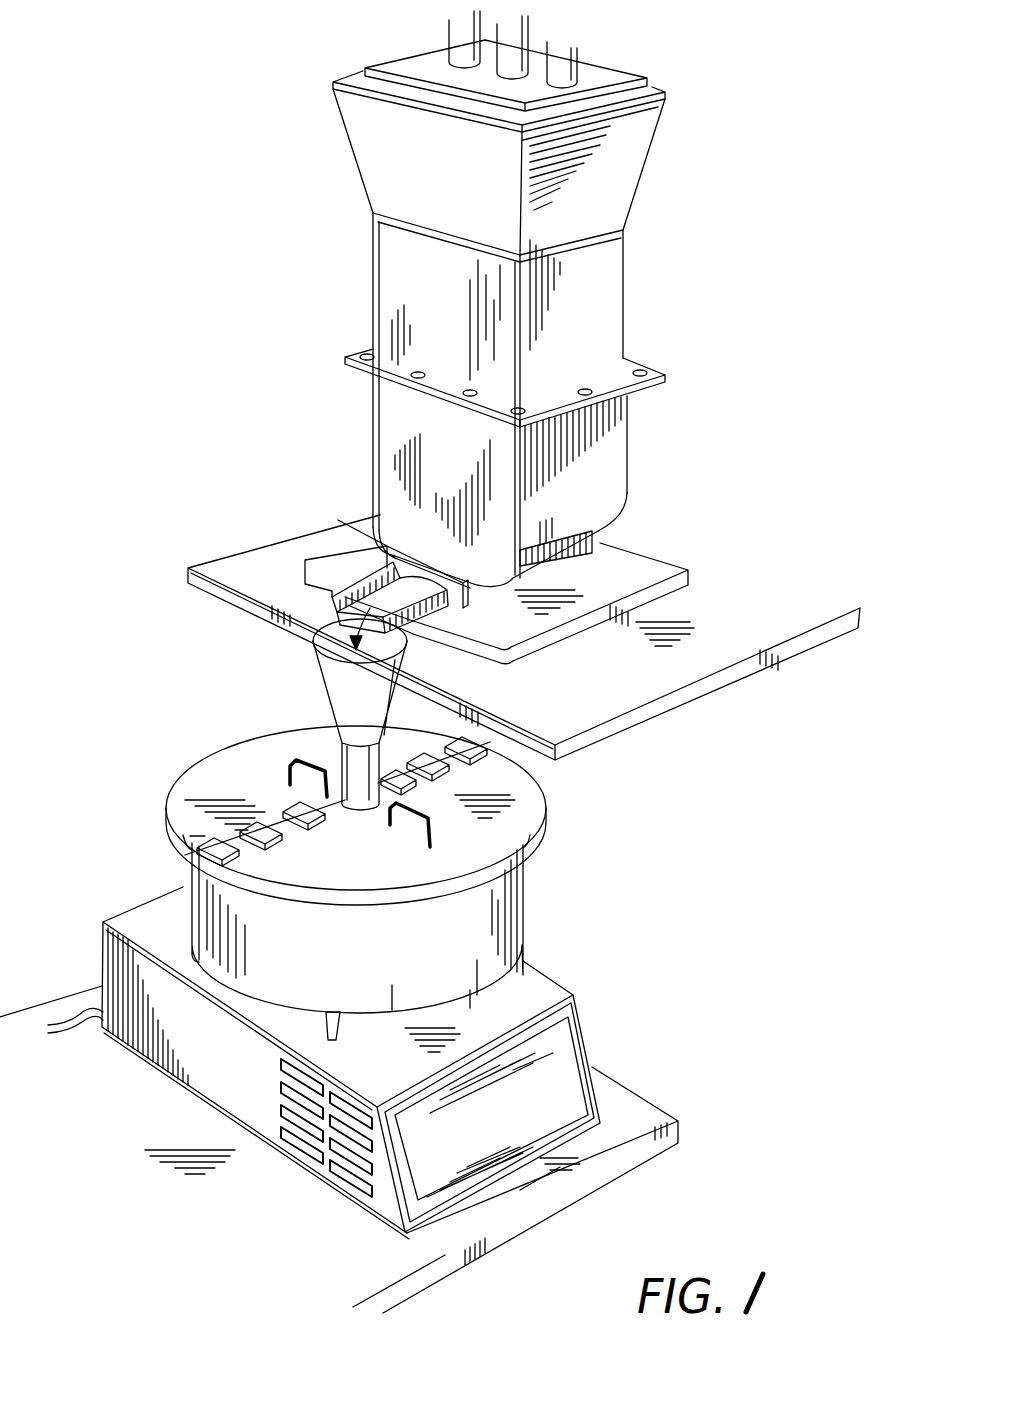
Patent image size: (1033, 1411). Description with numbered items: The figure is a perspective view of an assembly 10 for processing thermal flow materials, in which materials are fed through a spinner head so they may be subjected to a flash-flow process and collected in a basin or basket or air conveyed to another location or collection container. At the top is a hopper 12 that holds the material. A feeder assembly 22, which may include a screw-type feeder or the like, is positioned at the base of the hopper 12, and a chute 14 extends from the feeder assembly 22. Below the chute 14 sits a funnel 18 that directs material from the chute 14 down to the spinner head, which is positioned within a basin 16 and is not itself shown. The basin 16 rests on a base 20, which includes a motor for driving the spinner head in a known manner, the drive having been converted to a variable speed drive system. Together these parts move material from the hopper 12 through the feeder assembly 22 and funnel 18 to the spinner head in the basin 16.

The assembly 10 is at (255, 420).
The hopper 12 is at (605, 288).
The chute 14 is at (367, 580).
The basin 16 is at (498, 912).
The funnel 18 is at (342, 695).
The base 20 is at (580, 1013).
The feeder assembly 22 is at (633, 547).